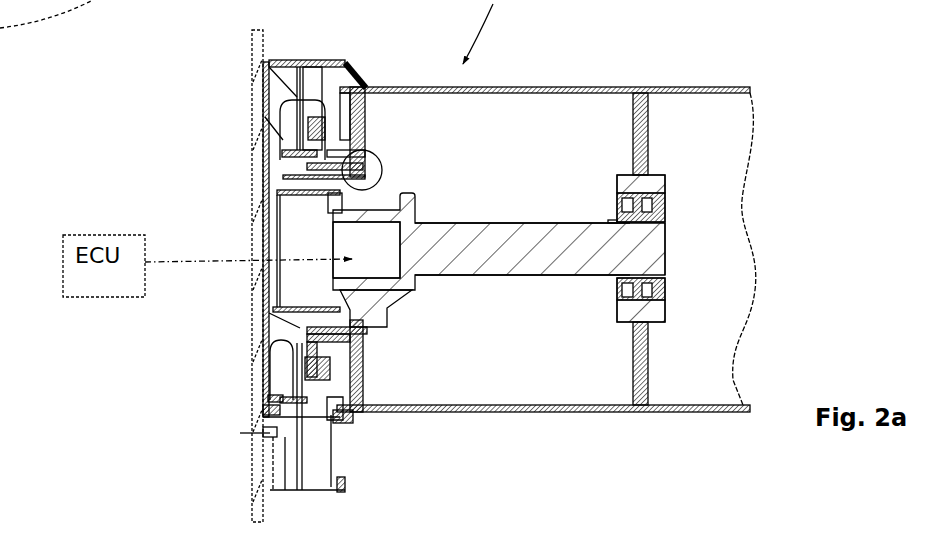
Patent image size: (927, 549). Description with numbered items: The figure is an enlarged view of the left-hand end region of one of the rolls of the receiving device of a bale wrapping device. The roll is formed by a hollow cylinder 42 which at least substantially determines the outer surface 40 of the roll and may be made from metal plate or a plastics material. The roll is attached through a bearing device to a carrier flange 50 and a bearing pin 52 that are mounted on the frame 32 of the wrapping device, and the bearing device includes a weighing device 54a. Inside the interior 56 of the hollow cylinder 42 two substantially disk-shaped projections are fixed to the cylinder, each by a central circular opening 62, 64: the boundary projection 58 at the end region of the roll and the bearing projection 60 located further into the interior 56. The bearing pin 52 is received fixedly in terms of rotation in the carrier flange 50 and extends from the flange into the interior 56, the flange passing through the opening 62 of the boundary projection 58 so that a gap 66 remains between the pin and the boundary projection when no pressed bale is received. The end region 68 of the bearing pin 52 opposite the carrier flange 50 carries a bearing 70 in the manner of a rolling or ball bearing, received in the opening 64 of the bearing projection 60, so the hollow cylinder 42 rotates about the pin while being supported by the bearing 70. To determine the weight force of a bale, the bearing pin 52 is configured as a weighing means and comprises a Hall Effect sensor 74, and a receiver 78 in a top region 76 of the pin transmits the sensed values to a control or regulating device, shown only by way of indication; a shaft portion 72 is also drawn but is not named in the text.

The frame 32 is at (243, 50).
The carrier flange 50 is at (273, 90).
The boundary projection 58 is at (364, 103).
The outer surface 40 is at (567, 87).
The bearing projection 60 is at (650, 122).
The hollow cylinder 42 is at (727, 83).
The circular opening 62 is at (388, 152).
The interior 56 is at (458, 155).
The weighing device 54a is at (513, 182).
The circular opening 64 is at (675, 161).
The end region 68 is at (677, 251).
The receiver 78 is at (348, 240).
The sensor 74 is at (330, 260).
The top region 76 is at (421, 294).
The bearing pin 52 is at (478, 281).
The shaft portion 72 is at (538, 291).
The gap 66 is at (384, 331).
The bearing 70 is at (658, 322).